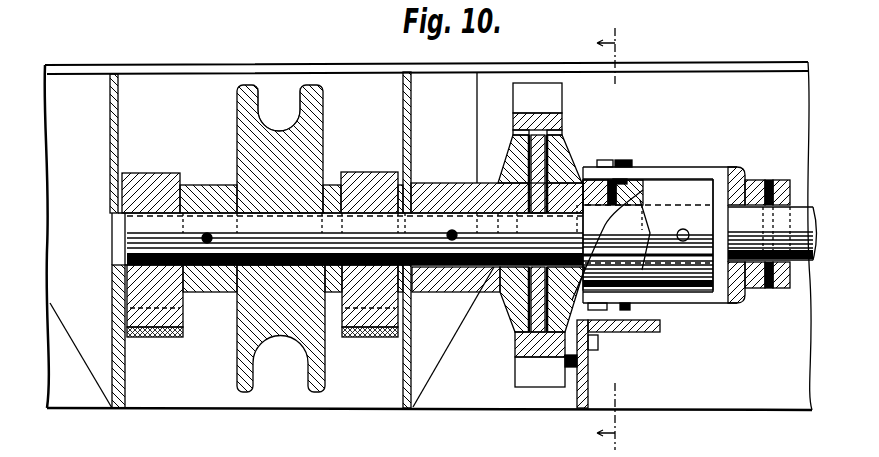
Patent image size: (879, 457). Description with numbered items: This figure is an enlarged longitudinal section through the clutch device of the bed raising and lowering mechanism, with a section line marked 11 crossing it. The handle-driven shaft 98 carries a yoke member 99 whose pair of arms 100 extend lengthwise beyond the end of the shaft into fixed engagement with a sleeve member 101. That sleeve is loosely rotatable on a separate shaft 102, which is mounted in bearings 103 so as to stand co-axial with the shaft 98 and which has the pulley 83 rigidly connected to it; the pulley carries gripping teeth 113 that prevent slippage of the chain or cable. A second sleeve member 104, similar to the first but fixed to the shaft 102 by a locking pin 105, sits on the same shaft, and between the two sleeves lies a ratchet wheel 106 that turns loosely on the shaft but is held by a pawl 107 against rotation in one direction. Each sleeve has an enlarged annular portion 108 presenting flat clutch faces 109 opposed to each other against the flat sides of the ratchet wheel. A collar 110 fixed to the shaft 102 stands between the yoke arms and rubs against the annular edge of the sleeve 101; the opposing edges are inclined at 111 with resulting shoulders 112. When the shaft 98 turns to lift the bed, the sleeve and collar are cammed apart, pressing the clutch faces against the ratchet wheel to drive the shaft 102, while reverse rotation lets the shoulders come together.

The pulley 83 is at (322, 156).
The shaft 98 is at (817, 201).
The yoke member 99 is at (745, 177).
The arms 100 is at (697, 169).
The sleeve member 101 is at (584, 172).
The shaft 102 is at (494, 268).
The bearings 103 is at (158, 172).
The second sleeve member 104 is at (450, 293).
The locking pin 105 is at (450, 232).
The ratchet wheel 106 is at (538, 352).
The pawl 107 is at (580, 361).
The enlarged annular portion 108 is at (525, 158).
The clutch faces 109 is at (513, 176).
The collar 110 is at (705, 290).
The inclined surfaces 111 is at (651, 230).
The shoulders 112 is at (652, 232).
The gripping teeth 113 is at (302, 113).
The section line 11 is at (619, 236).